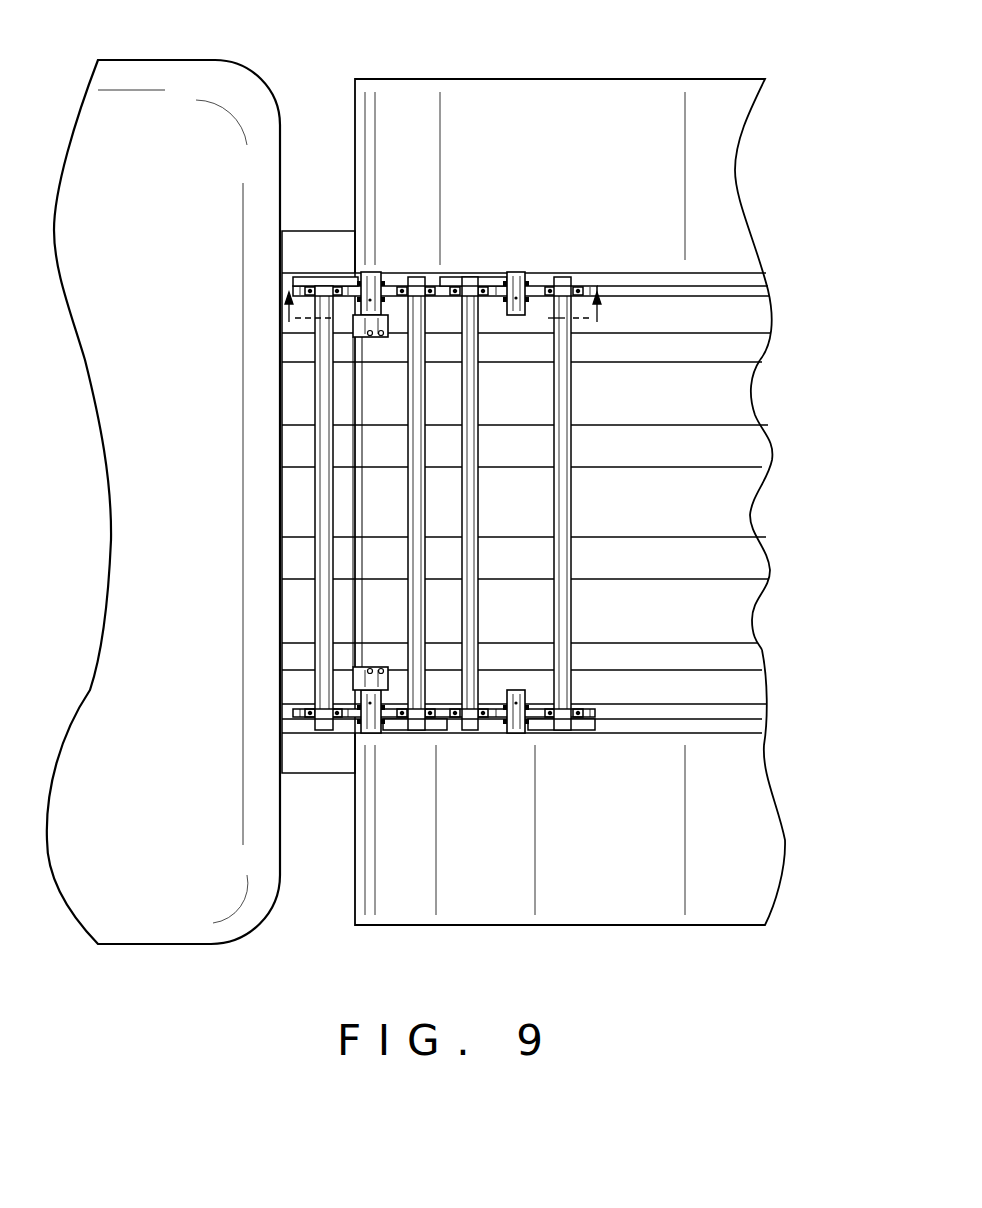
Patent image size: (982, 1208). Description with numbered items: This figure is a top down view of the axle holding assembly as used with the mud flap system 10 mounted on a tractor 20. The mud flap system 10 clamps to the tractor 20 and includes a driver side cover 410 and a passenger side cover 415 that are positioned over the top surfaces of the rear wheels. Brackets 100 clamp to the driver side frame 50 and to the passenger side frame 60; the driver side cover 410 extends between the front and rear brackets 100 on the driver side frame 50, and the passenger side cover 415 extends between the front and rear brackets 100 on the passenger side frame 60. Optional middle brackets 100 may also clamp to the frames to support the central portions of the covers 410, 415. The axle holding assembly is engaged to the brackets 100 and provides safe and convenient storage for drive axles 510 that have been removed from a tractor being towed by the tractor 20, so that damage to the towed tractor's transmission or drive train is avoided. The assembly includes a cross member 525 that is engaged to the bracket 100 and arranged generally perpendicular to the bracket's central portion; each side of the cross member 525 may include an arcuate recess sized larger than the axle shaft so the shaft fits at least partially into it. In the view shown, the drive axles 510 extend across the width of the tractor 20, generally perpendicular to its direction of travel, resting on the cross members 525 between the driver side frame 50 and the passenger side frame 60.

The mud flap system 10 is at (442, 302).
The tractor 20 is at (207, 82).
The driver side frame 50 is at (750, 709).
The passenger side frame 60 is at (750, 292).
The bracket 100 is at (371, 272).
The driver side cover 410 is at (675, 890).
The passenger side cover 415 is at (708, 105).
The drive axle 510 is at (323, 418).
The cross member 525 is at (301, 284).